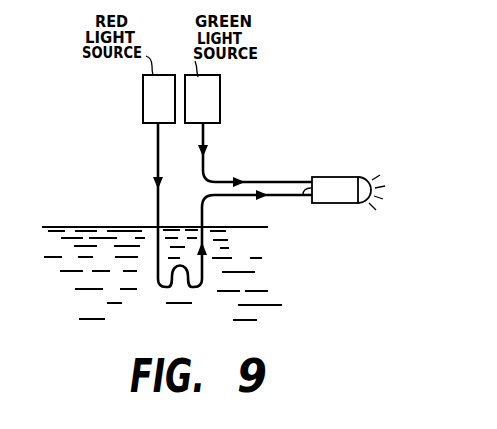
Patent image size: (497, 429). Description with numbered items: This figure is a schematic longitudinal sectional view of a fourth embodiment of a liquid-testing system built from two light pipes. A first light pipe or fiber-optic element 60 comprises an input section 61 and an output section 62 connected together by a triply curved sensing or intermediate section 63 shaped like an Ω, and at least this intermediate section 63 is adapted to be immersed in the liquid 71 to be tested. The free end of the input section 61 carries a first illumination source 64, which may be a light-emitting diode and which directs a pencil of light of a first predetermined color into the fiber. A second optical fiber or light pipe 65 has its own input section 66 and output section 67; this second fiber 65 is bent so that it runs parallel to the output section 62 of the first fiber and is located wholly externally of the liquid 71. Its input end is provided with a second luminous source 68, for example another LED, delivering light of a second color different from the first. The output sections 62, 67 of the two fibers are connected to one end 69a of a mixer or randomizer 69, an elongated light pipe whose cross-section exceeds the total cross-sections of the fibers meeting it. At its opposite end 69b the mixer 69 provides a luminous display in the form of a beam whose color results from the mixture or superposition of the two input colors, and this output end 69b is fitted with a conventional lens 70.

The first light pipe or fiber-optic element 60 is at (133, 171).
The input section 61 is at (158, 143).
The output section 62 is at (242, 197).
The triply curved sensing or intermediate section 63 is at (165, 290).
The first illumination source 64 is at (147, 97).
The second optical fiber or light pipe 65 is at (265, 163).
The input section 66 is at (203, 143).
The output section 67 is at (290, 180).
The second luminous source 68 is at (208, 91).
The mixer or randomizer 69 is at (331, 181).
The input end of mixer 69a is at (303, 196).
The output end of mixer 69b is at (353, 191).
The lens 70 is at (362, 174).
The liquid 71 is at (78, 231).